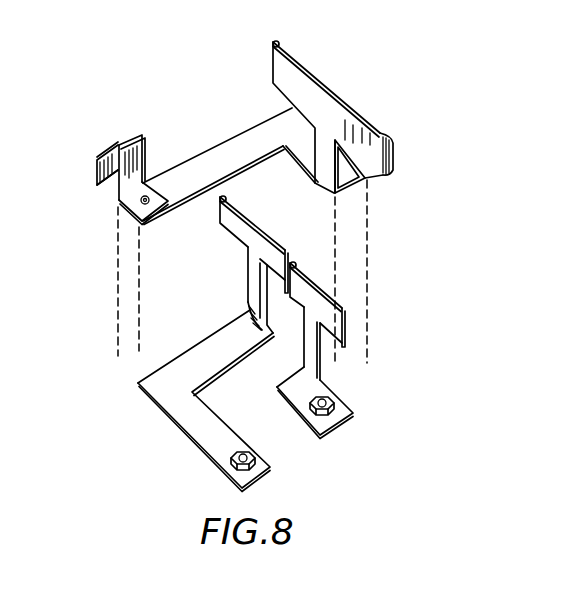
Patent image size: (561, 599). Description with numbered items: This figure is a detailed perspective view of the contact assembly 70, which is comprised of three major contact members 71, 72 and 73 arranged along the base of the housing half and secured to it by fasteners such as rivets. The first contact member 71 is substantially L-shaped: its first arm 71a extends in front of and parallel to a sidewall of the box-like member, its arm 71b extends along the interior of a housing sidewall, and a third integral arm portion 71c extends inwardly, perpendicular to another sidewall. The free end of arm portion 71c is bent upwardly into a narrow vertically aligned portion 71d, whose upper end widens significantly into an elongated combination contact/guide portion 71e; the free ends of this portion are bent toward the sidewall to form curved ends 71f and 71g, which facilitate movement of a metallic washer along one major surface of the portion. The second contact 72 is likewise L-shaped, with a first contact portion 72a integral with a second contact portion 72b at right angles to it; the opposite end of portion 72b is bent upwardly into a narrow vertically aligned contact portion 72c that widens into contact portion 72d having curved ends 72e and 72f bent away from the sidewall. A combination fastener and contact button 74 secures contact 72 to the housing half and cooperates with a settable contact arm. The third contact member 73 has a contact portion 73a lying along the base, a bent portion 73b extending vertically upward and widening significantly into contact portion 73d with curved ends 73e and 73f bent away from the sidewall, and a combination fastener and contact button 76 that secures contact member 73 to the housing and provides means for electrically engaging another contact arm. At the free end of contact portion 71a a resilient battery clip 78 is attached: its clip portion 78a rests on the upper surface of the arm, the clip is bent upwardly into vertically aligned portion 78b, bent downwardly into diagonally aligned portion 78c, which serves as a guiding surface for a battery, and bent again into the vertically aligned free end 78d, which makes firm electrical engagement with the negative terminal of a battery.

The contact assembly 70 is at (256, 257).
The contact member 71 is at (303, 123).
The first arm 71a is at (238, 143).
The arm 71b is at (300, 150).
The third integral arm portion 71c is at (362, 176).
The vertically aligned portion 71d is at (334, 180).
The combination contact/guide portion 71e is at (327, 87).
The curved end 71f is at (279, 39).
The curved end 71g is at (388, 138).
The second contact 72 is at (186, 344).
The first contact portion 72a is at (187, 417).
The second contact portion 72b is at (222, 333).
The vertically aligned contact portion 72c is at (250, 304).
The contact portion 72d is at (240, 238).
The curved end 72e is at (220, 207).
The curved end 72f is at (292, 254).
The third contact member 73 is at (341, 345).
The contact portion 73a is at (300, 388).
The bent portion 73b is at (306, 360).
The contact portion 73d is at (322, 297).
The curved end 73e is at (295, 262).
The curved end 73f is at (345, 330).
The combination fastener and contact button 74 is at (230, 463).
The combination fastener and contact button 76 is at (308, 420).
The resilient battery clip 78 is at (102, 165).
The clip portion 78a is at (120, 202).
The vertically aligned portion 78b is at (143, 152).
The diagonally aligned portion 78c is at (108, 157).
The vertically aligned free end 78d is at (94, 172).